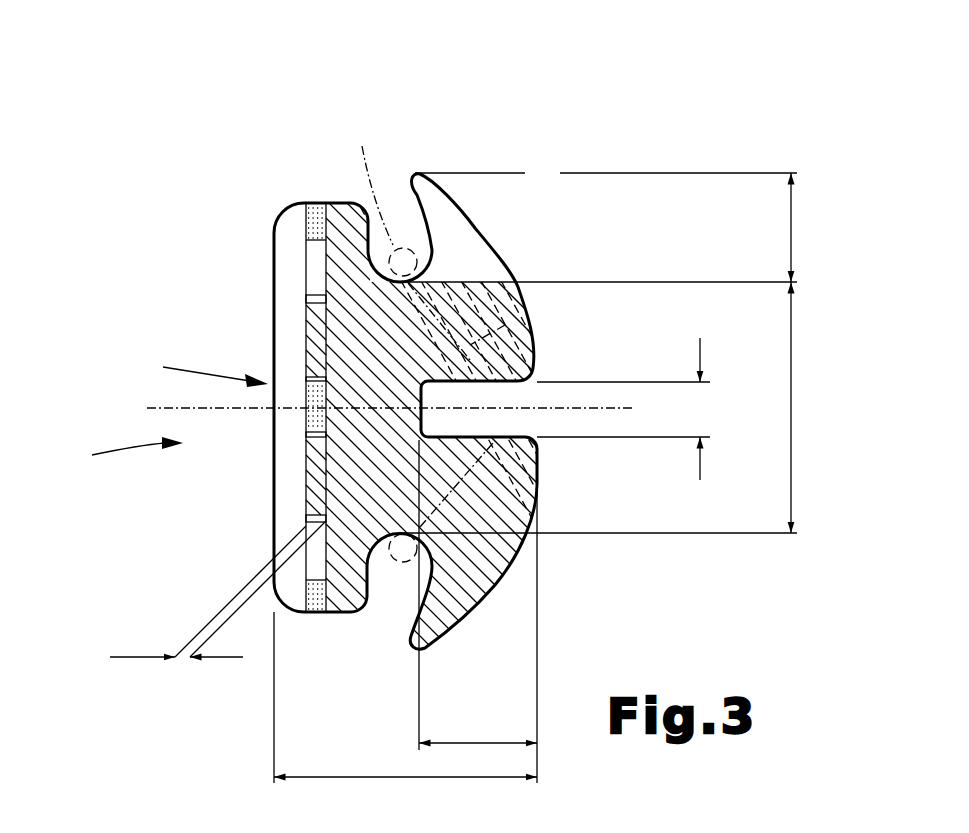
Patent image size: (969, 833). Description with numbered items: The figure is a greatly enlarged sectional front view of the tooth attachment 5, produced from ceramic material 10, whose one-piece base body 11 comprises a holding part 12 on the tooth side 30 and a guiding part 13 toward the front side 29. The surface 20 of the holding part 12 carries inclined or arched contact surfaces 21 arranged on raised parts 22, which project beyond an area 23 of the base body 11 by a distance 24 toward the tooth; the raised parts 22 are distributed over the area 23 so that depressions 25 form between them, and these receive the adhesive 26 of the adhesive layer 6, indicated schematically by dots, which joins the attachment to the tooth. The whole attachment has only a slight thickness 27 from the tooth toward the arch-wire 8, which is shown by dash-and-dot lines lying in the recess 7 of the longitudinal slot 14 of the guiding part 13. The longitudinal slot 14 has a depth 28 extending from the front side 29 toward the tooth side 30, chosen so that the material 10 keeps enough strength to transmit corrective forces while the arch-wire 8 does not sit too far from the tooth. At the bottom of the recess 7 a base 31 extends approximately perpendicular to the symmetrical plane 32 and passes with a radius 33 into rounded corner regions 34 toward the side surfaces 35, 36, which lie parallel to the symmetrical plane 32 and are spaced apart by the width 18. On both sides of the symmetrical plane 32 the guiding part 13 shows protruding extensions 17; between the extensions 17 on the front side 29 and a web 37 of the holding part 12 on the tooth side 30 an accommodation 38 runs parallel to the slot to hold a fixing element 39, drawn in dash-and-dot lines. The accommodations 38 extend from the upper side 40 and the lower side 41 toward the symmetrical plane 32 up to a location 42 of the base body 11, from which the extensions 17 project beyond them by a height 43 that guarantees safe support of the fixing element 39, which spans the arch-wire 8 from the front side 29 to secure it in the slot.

The tooth attachment 5 is at (665, 115).
The adhesive layer 6 is at (307, 215).
The recess 7 is at (560, 397).
The arch-wire 8 is at (538, 338).
The ceramic material 10 is at (491, 297).
The base body 11 is at (497, 190).
The holding part 12 is at (312, 283).
The guiding part 13 is at (522, 527).
The longitudinal slot 14 is at (546, 416).
The extensions 17 is at (457, 225).
The width 18 is at (705, 412).
The surface 20 is at (200, 370).
The contact surface 21 is at (308, 353).
The raised parts 22 is at (311, 300).
The area 23 is at (308, 614).
The distance 24 is at (133, 657).
The depressions 25 is at (308, 390).
The adhesive 26 is at (292, 222).
The thickness 27 is at (365, 775).
The depth 28 is at (475, 742).
The front side 29 is at (657, 322).
The tooth side 30 is at (121, 455).
The base 31 is at (441, 290).
The symmetrical plane 32 is at (152, 406).
The radius 33 is at (310, 416).
The corner regions 34 is at (437, 424).
The side surface 35 is at (540, 381).
The side surface 36 is at (538, 447).
The web 37 is at (340, 215).
The accommodation 38 is at (413, 215).
The fixing element 39 is at (379, 340).
The upper side 40 is at (305, 120).
The lower side 41 is at (288, 692).
The location 42 is at (793, 375).
The height 43 is at (793, 245).